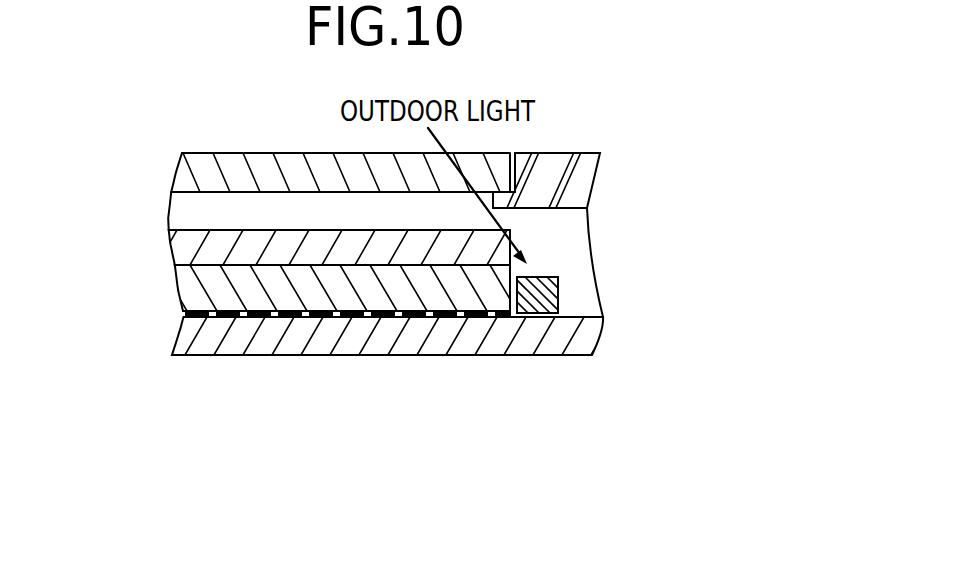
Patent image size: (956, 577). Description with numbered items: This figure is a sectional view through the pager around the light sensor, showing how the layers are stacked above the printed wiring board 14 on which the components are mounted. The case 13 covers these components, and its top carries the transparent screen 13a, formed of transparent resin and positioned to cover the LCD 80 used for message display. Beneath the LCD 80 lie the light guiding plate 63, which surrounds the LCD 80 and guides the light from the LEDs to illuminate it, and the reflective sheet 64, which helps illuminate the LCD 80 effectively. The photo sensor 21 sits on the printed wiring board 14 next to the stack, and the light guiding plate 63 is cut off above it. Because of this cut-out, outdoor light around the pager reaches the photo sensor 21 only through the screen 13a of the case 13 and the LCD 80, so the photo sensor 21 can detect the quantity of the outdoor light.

The transparent screen 13a is at (185, 175).
The case 13 is at (582, 152).
The LCD 80 is at (187, 235).
The light guiding plate 63 is at (188, 293).
The reflective sheet 64 is at (185, 313).
The printed wiring board 14 is at (587, 335).
The photo sensor 21 is at (552, 292).